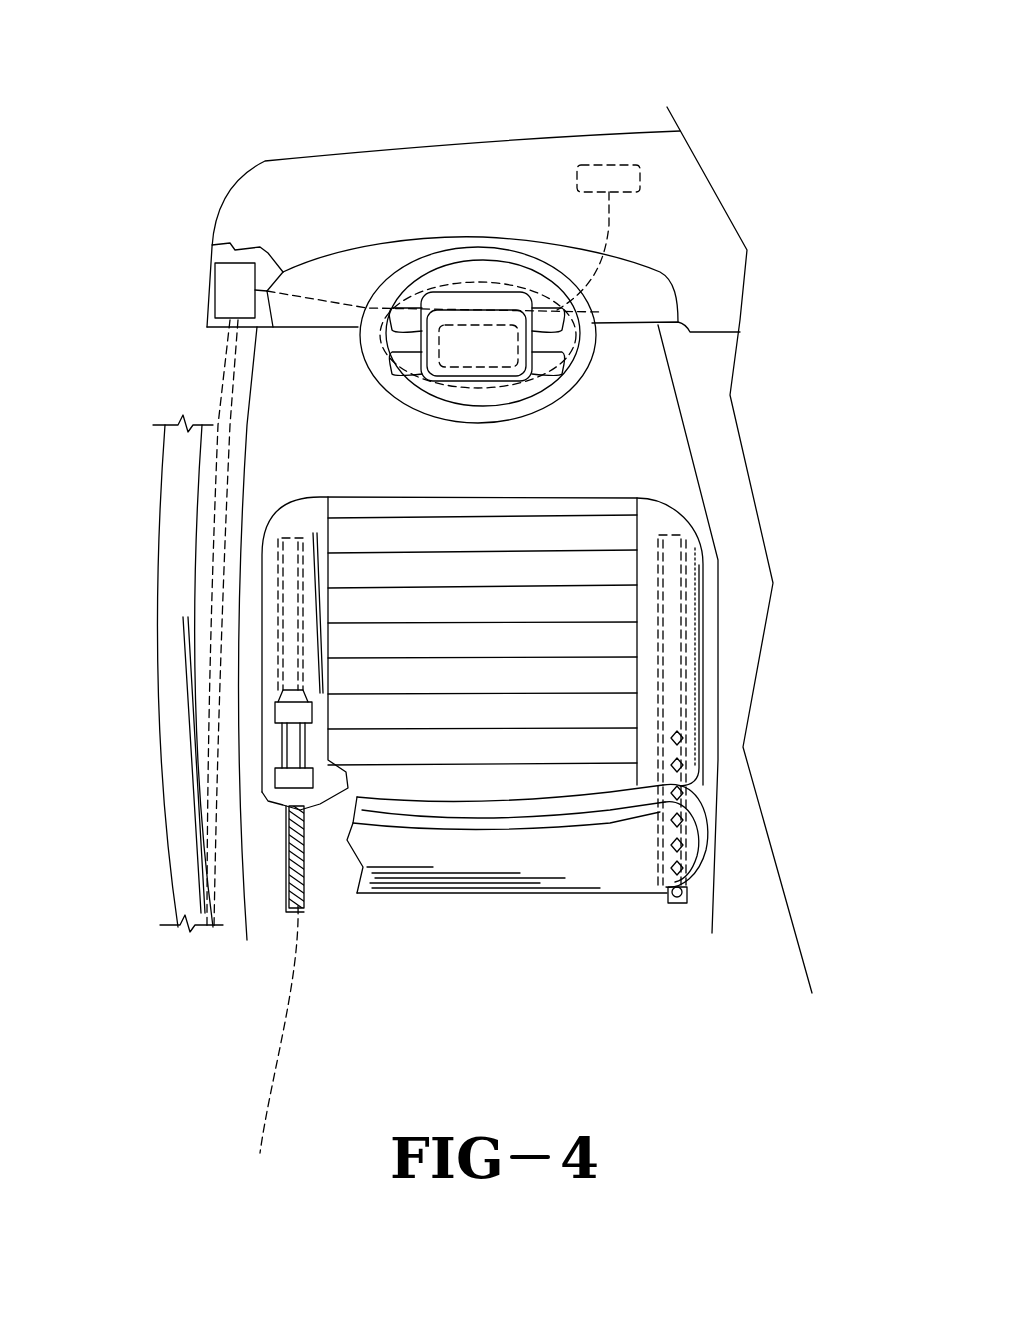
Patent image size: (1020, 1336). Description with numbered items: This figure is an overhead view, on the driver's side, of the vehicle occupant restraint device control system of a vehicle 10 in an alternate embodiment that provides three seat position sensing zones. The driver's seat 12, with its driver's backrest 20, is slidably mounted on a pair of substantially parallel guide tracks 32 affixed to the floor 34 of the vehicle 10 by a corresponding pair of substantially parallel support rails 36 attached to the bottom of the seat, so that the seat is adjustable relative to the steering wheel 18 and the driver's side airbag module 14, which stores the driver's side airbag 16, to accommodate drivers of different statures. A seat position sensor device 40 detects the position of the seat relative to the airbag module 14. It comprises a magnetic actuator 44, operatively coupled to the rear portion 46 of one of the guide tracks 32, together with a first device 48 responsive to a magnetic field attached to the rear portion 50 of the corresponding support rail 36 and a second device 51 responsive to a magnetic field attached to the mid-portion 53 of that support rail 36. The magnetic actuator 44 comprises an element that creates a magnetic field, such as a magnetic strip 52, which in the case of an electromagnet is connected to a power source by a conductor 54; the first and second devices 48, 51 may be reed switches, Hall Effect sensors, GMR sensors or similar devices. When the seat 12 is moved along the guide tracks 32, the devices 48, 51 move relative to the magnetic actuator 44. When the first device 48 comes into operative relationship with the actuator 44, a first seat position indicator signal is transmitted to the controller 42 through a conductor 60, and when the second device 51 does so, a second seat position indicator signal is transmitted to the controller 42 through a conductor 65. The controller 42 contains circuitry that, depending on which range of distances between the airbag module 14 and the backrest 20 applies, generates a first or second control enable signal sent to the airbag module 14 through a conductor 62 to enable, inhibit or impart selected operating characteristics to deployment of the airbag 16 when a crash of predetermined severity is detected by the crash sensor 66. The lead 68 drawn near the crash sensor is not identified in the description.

The vehicle 10 is at (184, 114).
The driver's seat 12 is at (745, 664).
The driver's side airbag module 14 is at (471, 290).
The driver's side airbag 16 is at (513, 357).
The steering wheel 18 is at (428, 266).
The driver's backrest 20 is at (565, 872).
The guide tracks 32 is at (277, 570).
The floor 34 is at (257, 493).
The support rails 36 is at (293, 622).
The seat position sensor device 40 is at (248, 785).
The controller 42 is at (228, 292).
The magnetic actuator 44 is at (283, 862).
The rear portion of guide track 46 is at (292, 895).
The first device responsive to a magnetic field 48 is at (293, 780).
The rear portion of support rail 50 is at (300, 700).
The second device responsive to a magnetic field 51 is at (300, 712).
The magnetic strip 52 is at (290, 903).
The mid-portion of support rail 53 is at (303, 693).
The conductor 54 is at (287, 995).
The conductor 60 is at (227, 370).
The conductor 62 is at (317, 293).
The conductor 65 is at (228, 407).
The crash sensor 66 is at (607, 174).
The wire 68 is at (610, 226).